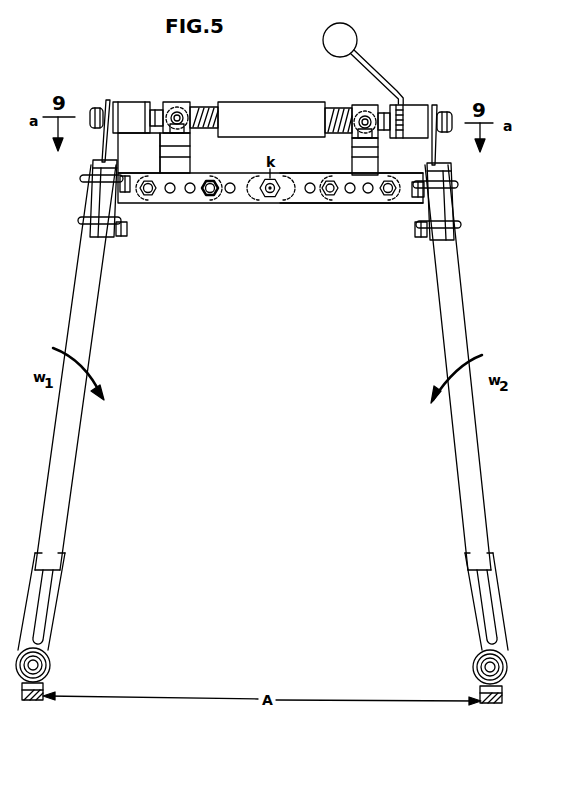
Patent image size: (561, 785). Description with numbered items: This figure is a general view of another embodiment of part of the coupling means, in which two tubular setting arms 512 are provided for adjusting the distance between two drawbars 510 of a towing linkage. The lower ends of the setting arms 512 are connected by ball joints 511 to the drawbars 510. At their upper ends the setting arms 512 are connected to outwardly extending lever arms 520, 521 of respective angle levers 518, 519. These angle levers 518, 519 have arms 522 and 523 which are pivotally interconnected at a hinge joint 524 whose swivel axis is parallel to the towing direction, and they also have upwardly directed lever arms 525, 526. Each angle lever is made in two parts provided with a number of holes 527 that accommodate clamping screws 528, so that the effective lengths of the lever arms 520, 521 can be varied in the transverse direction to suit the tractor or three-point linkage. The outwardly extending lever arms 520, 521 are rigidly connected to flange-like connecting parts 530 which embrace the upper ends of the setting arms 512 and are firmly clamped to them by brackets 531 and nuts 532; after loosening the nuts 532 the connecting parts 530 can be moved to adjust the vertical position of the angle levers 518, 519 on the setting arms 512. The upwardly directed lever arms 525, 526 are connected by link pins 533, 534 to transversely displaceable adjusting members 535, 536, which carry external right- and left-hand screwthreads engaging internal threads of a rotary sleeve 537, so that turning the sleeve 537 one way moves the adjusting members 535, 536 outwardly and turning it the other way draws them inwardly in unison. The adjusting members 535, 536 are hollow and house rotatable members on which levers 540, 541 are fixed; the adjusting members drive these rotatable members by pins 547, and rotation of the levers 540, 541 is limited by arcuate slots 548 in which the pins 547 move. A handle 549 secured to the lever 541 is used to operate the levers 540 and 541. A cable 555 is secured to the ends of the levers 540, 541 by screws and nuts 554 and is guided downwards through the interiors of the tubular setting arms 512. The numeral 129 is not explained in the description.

The screws and nuts 554 is at (96, 107).
The cable 555 is at (106, 140).
The lever 540 is at (130, 102).
The link pin 533 is at (171, 104).
The pin 547 is at (178, 113).
The arcuate slot 548 is at (182, 132).
The adjusting member 535 is at (208, 108).
The rotary sleeve 537 is at (260, 112).
The adjusting member 536 is at (333, 108).
The link pin 534 is at (363, 110).
The upwardly directed lever arm 526 is at (360, 162).
The lever 541 is at (417, 106).
The handle 549 is at (376, 76).
The clamping screw 528 is at (139, 153).
The upwardly directed lever arm 525 is at (172, 158).
The angle lever 518 is at (162, 204).
The angle lever 519 is at (378, 204).
The lever arm 520 is at (136, 204).
The holes 527 is at (190, 193).
The hex bolt 129 is at (217, 180).
The arm 522 is at (230, 194).
The hinge joint 524 is at (270, 198).
The arm 523 is at (310, 194).
The lever arm 521 is at (392, 196).
The connecting part 530 is at (102, 198).
The bracket 531 is at (82, 179).
The nut 532 is at (120, 237).
The tubular setting arm 512 is at (65, 440).
The ball joint 511 is at (34, 665).
The drawbar 510 is at (44, 690).